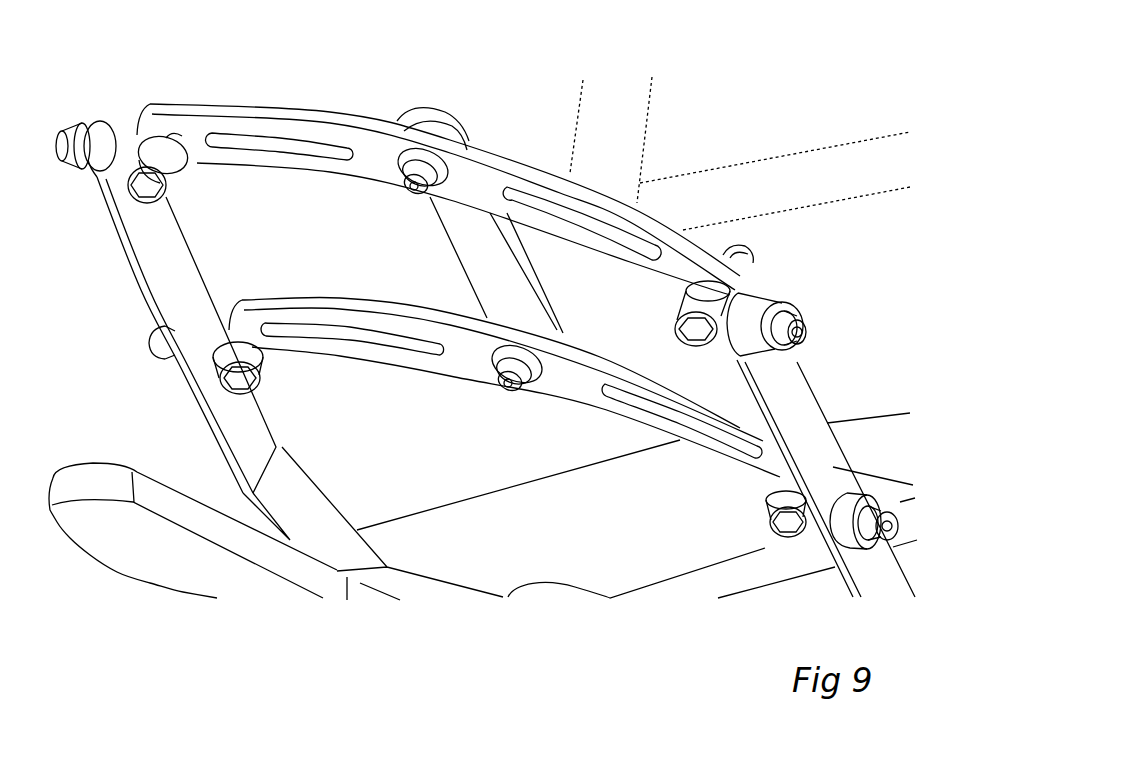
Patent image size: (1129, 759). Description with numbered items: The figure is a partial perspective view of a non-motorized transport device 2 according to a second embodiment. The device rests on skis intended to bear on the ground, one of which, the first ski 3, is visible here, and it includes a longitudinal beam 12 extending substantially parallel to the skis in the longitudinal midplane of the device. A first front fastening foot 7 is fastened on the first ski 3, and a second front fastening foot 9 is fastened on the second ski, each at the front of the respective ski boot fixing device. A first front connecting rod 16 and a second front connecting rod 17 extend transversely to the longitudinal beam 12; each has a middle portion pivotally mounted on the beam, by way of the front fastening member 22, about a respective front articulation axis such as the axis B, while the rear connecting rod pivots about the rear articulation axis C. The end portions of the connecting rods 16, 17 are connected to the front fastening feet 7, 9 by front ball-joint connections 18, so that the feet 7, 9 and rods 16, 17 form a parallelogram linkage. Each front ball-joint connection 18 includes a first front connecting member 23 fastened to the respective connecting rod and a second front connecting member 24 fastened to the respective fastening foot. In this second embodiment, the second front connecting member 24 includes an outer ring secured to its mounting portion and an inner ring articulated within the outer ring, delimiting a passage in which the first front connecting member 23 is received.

The non-motorized transport device 2 is at (699, 113).
The first ski 3 is at (160, 490).
The first front fastening foot 7 is at (147, 238).
The second front fastening foot 9 is at (808, 413).
The longitudinal beam 12 is at (815, 170).
The first front connecting rod 16 is at (457, 357).
The second front connecting rod 17 is at (288, 127).
The front ball-joint connection 18 is at (178, 177).
The front fastening member 22 is at (418, 117).
The first front connecting member 23 is at (172, 140).
The second front connecting member 24 is at (122, 152).
The front articulation axis B is at (413, 190).
The rear articulation axis C is at (503, 383).